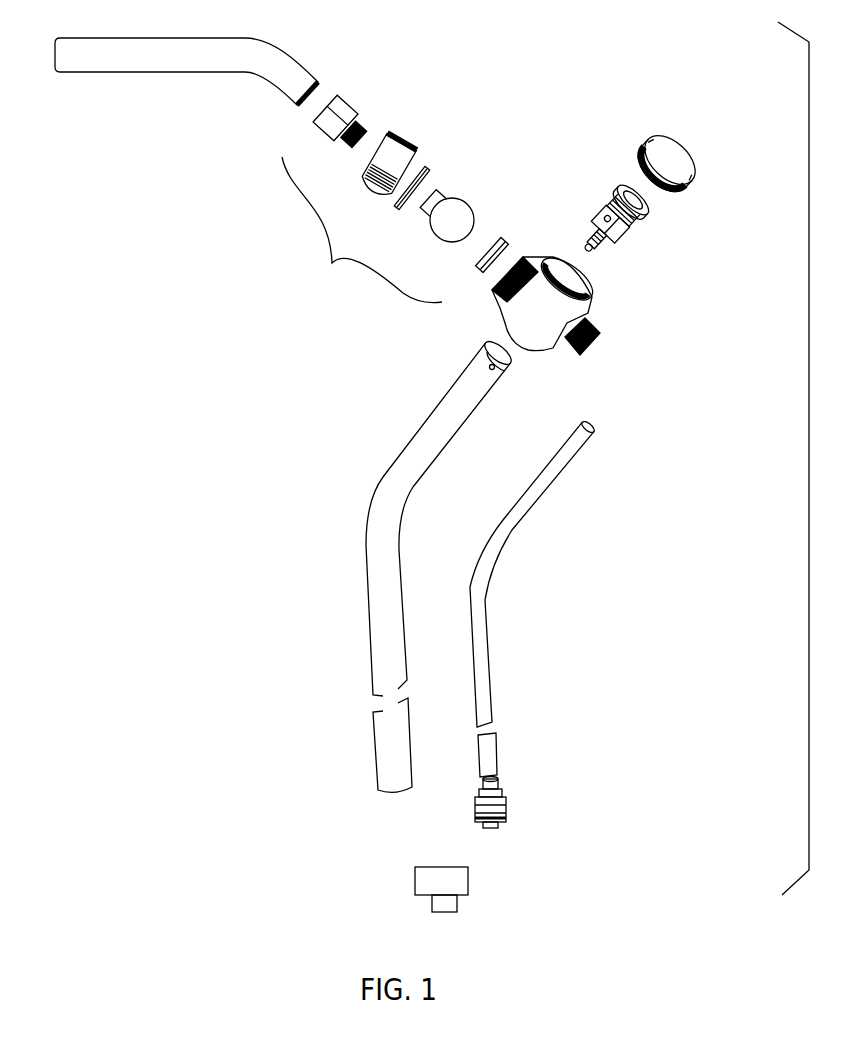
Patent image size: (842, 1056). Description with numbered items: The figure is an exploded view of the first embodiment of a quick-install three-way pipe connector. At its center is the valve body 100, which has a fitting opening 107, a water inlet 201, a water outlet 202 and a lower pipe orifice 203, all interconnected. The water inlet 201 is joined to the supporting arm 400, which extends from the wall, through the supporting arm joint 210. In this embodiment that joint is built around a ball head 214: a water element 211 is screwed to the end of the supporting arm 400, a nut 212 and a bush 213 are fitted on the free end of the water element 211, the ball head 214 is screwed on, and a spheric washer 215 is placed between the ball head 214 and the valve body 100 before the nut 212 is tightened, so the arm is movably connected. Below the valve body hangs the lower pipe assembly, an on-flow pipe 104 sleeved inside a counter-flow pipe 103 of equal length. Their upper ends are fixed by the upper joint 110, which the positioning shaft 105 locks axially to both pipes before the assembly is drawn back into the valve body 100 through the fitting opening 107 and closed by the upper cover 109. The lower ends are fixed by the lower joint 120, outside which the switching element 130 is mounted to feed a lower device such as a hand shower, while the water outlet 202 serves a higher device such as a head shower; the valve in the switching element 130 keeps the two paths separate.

The valve body 100 is at (536, 281).
The counter-flow pipe 103 is at (377, 530).
The on-flow pipe 104 is at (495, 543).
The positioning shaft 105 is at (592, 255).
The fitting opening 107 is at (593, 302).
The upper cover 109 is at (652, 140).
The upper joint 110 is at (605, 187).
The lower joint 120 is at (507, 800).
The switching element 130 is at (455, 887).
The water inlet 201 is at (530, 258).
The water outlet 202 is at (598, 338).
The lower pipe orifice 203 is at (527, 352).
The supporting arm joint 210 is at (406, 154).
The water element 211 is at (340, 100).
The nut 212 is at (388, 132).
The bush 213 is at (422, 168).
The ball head 214 is at (450, 203).
The spheric washer 215 is at (497, 240).
The supporting arm 400 is at (128, 57).